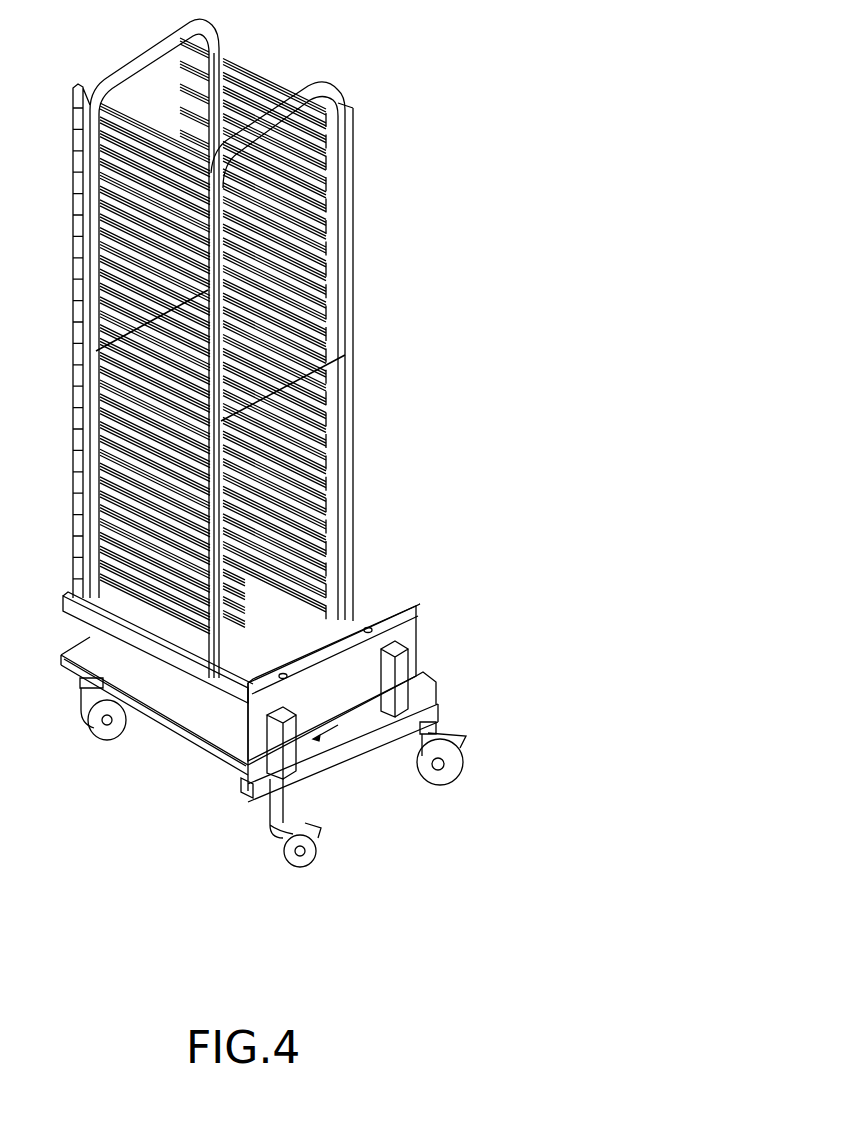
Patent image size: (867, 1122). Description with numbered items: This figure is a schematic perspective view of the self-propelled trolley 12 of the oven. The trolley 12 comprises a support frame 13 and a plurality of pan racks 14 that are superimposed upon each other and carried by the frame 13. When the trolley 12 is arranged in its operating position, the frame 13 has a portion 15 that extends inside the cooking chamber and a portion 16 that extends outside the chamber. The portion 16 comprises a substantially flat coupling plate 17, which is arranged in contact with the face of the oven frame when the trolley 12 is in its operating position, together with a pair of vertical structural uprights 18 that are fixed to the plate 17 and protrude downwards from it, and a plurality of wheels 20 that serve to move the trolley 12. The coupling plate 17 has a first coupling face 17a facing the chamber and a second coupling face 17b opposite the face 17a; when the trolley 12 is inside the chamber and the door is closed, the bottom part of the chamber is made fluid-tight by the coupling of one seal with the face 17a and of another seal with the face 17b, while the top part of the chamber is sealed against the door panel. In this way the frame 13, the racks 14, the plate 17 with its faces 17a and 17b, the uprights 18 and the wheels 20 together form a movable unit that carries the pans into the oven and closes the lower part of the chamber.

The self-propelled trolley 12 is at (513, 148).
The support frame 13 is at (162, 745).
The pan racks 14 is at (345, 177).
The portion 15 is at (155, 632).
The portion 16 is at (348, 770).
The coupling plate 17 is at (413, 624).
The first coupling face 17a is at (233, 714).
The second coupling face 17b is at (410, 636).
The vertical structural uprights 18 is at (267, 742).
The wheels 20 is at (292, 860).